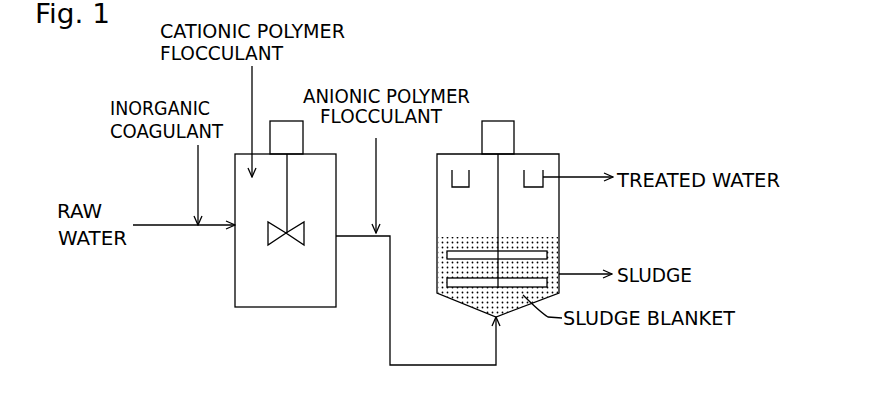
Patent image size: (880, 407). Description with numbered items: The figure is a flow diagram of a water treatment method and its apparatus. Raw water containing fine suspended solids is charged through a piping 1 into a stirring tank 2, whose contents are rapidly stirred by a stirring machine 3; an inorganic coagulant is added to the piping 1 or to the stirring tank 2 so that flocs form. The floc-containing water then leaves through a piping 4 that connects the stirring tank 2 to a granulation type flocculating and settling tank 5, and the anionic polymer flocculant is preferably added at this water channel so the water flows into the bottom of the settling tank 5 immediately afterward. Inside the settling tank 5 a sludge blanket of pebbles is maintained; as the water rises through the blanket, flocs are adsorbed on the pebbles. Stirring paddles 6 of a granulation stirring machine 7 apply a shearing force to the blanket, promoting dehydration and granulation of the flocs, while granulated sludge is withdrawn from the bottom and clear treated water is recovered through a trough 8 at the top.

The piping 1 is at (163, 224).
The stirring tank 2 is at (243, 308).
The stirring machine 3 is at (290, 244).
The piping 4 is at (390, 278).
The granulation type flocculating and settling tank 5 is at (515, 312).
The stirring paddles 6 is at (462, 245).
The granulation stirring machine 7 is at (500, 121).
The trough 8 is at (532, 188).